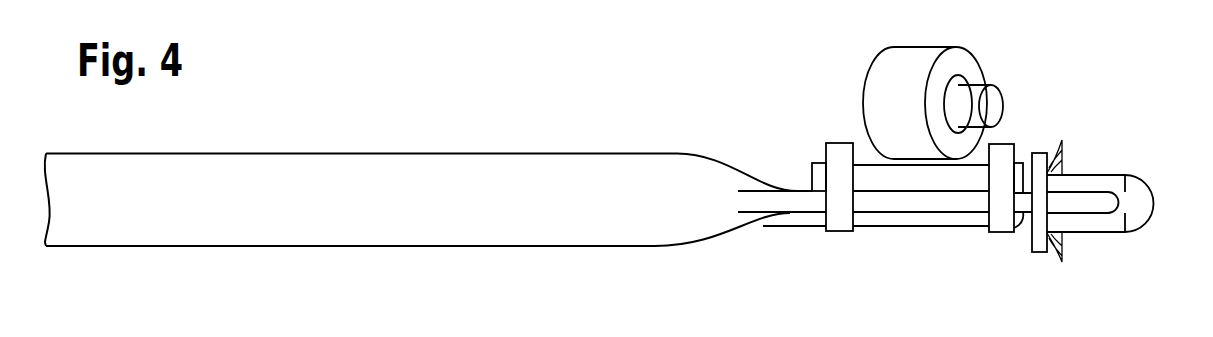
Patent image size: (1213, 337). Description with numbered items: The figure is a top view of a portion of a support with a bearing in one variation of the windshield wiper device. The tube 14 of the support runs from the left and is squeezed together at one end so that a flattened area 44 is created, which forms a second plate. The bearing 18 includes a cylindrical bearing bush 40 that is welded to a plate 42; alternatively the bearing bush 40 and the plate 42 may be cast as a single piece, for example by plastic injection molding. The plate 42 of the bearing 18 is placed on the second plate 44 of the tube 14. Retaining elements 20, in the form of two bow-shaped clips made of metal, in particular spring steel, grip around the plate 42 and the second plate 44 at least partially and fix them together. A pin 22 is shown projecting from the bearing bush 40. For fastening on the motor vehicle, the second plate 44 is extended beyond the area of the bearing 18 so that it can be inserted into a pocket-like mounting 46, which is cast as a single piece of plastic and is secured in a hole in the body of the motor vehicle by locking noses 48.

The tube 14 is at (662, 167).
The bearing 18 is at (849, 64).
The retaining elements 20 is at (839, 222).
The pin 22 is at (992, 97).
The bearing bush 40 is at (967, 62).
The plate 42 is at (913, 175).
The flattened area 44 is at (799, 203).
The mounting 46 is at (1107, 180).
The locking noses 48 is at (1062, 158).